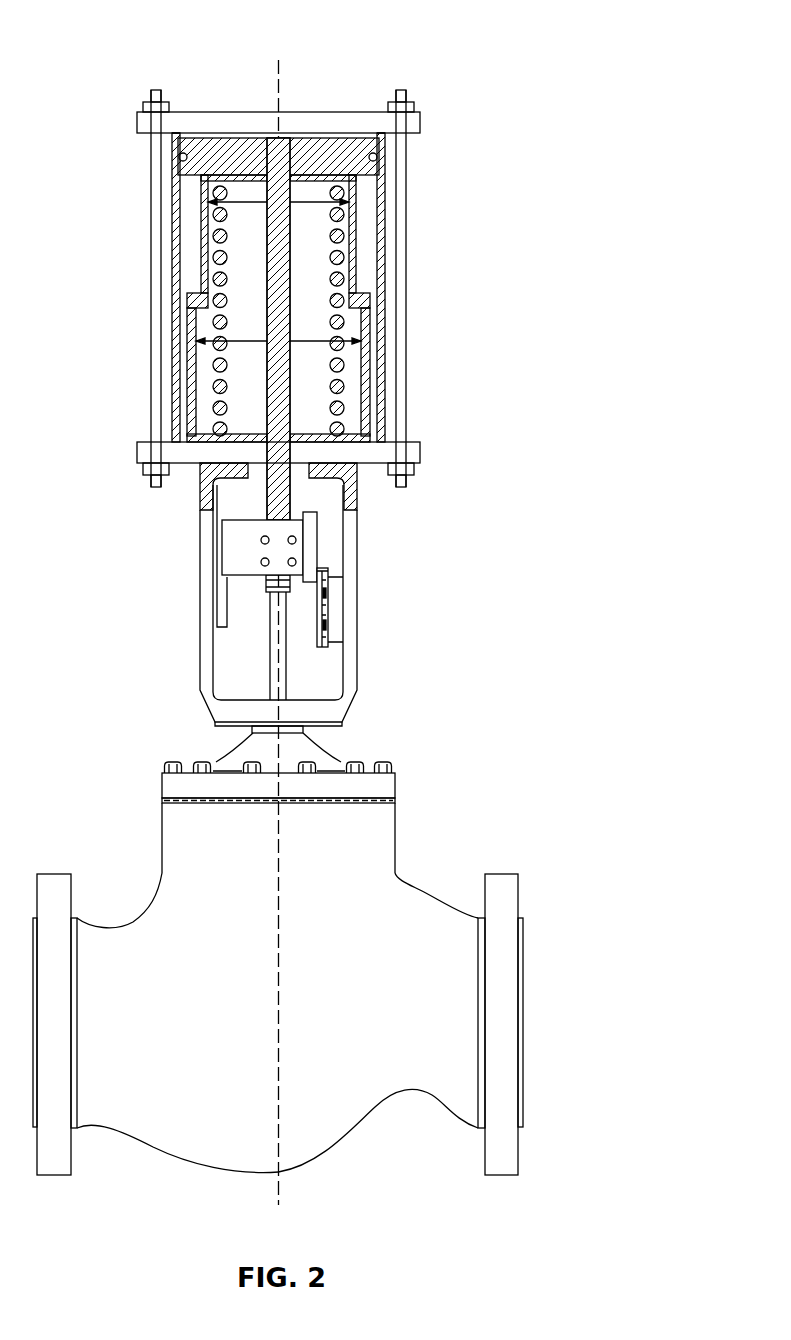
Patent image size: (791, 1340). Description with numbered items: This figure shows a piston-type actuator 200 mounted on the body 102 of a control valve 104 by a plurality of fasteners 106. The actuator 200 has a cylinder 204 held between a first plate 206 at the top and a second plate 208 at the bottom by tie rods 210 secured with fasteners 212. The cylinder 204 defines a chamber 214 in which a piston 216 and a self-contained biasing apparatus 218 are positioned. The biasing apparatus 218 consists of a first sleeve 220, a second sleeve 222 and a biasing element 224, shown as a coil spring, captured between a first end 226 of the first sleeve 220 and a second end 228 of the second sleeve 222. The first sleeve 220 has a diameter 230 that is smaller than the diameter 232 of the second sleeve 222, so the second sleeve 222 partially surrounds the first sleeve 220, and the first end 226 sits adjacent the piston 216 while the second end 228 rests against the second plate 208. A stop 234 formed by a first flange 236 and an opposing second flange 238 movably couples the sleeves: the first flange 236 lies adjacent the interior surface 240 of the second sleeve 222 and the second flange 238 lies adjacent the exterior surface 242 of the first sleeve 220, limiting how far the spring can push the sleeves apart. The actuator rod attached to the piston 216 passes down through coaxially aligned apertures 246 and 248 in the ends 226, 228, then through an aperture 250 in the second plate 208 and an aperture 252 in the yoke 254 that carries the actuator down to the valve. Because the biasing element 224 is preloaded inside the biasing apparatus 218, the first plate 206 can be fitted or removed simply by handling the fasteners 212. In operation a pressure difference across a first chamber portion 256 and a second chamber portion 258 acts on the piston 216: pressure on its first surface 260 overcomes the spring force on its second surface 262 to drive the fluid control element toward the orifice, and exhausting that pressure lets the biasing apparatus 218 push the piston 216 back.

The actuator 200 is at (556, 45).
The first plate 206 is at (366, 122).
The tie rods 210 is at (158, 90).
The fasteners 212 is at (150, 107).
The piston 216 is at (256, 152).
The first chamber portion 256 is at (304, 140).
The second surface 262 is at (181, 155).
The aperture 246 is at (374, 157).
The first surface 260 is at (376, 138).
The cylinder 204 is at (383, 410).
The chamber 214 is at (172, 178).
The second chamber portion 258 is at (372, 248).
The first end 226 is at (200, 187).
The first sleeve 220 is at (355, 236).
The biasing apparatus 218 is at (187, 223).
The stop 234 is at (376, 293).
The second flange 238 is at (190, 293).
The first flange 236 is at (197, 308).
The interior surface 240 is at (194, 403).
The second sleeve 222 is at (368, 378).
The aperture 248 is at (218, 420).
The biasing element 224 is at (205, 262).
The exterior surface 242 is at (356, 275).
The diameter 230 is at (330, 193).
The diameter 232 is at (345, 330).
The second end 228 is at (350, 450).
The second plate 208 is at (138, 455).
The aperture 250 is at (267, 453).
The aperture 252 is at (303, 478).
The yoke 254 is at (205, 605).
The control valve 104 is at (517, 721).
The fasteners 106 is at (170, 760).
The body 102 is at (391, 850).